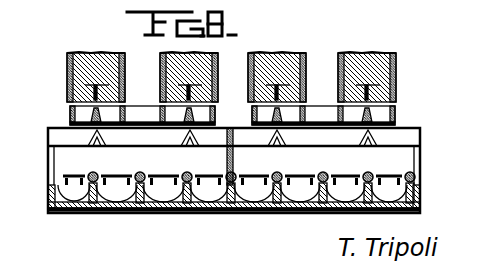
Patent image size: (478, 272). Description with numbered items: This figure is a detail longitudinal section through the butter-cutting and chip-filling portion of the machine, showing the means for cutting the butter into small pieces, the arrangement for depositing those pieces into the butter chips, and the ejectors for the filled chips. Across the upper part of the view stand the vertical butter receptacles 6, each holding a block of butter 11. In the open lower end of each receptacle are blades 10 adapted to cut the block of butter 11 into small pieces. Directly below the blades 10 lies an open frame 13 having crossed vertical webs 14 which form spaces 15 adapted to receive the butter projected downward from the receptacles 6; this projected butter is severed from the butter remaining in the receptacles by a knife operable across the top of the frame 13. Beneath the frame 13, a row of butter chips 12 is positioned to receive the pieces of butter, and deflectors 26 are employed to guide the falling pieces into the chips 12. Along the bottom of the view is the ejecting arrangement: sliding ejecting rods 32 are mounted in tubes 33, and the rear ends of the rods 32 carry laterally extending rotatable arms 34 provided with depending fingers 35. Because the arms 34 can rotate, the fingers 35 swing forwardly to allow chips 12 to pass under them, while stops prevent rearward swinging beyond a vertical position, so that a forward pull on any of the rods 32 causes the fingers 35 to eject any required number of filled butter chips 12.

The butter receptacle 6 is at (67, 62).
The blade 10 is at (67, 87).
The block of butter 11 is at (84, 53).
The butter chip 12 is at (170, 203).
The open frame 13 is at (72, 112).
The crossed vertical web 14 is at (48, 129).
The space 15 is at (353, 114).
The deflector 26 is at (88, 137).
The sliding ejecting rod 32 is at (112, 191).
The tube 33 is at (82, 190).
The rotatable arm 34 is at (64, 177).
The depending finger 35 is at (62, 190).